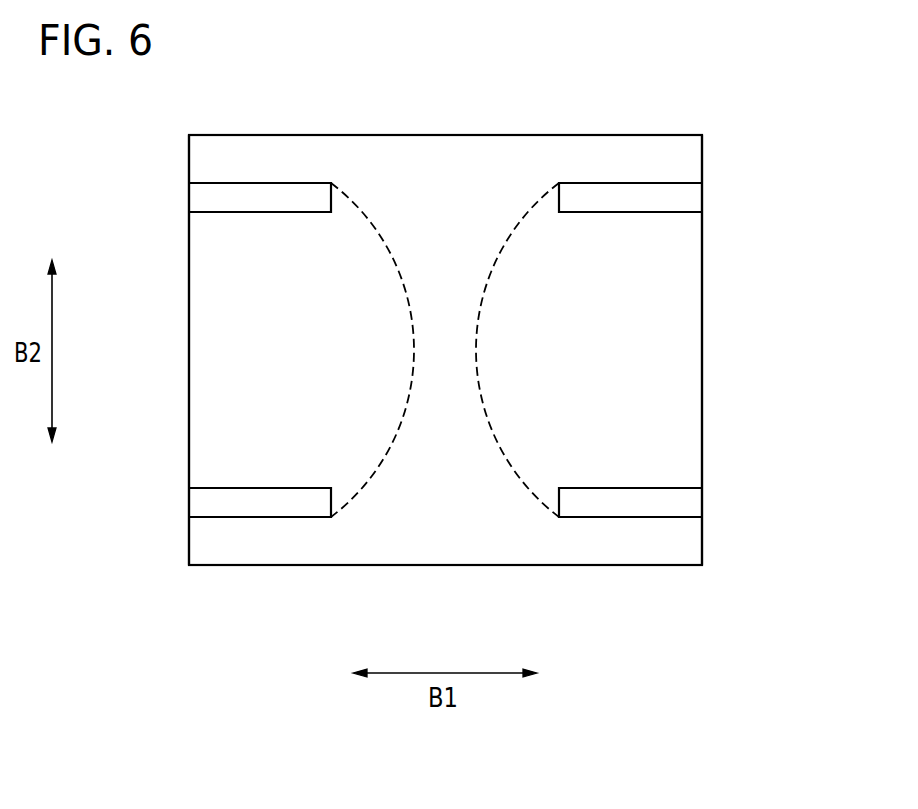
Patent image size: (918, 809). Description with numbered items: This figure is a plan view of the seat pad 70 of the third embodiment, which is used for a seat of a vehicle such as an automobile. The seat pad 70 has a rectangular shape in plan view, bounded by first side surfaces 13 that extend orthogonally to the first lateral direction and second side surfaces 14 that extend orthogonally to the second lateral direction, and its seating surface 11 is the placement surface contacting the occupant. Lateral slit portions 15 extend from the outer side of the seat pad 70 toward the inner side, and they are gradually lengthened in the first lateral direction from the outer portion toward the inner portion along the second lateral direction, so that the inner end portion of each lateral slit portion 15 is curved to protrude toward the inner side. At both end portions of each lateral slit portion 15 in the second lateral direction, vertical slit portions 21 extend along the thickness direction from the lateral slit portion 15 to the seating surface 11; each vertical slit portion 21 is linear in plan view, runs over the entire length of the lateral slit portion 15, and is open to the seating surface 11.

The seat pad 70 is at (692, 92).
The seating surface 11 is at (484, 158).
The first side surface 13 is at (189, 537).
The second side surface 14 is at (411, 135).
The lateral slit portion 15 is at (393, 437).
The vertical slit portion 21 is at (259, 192).